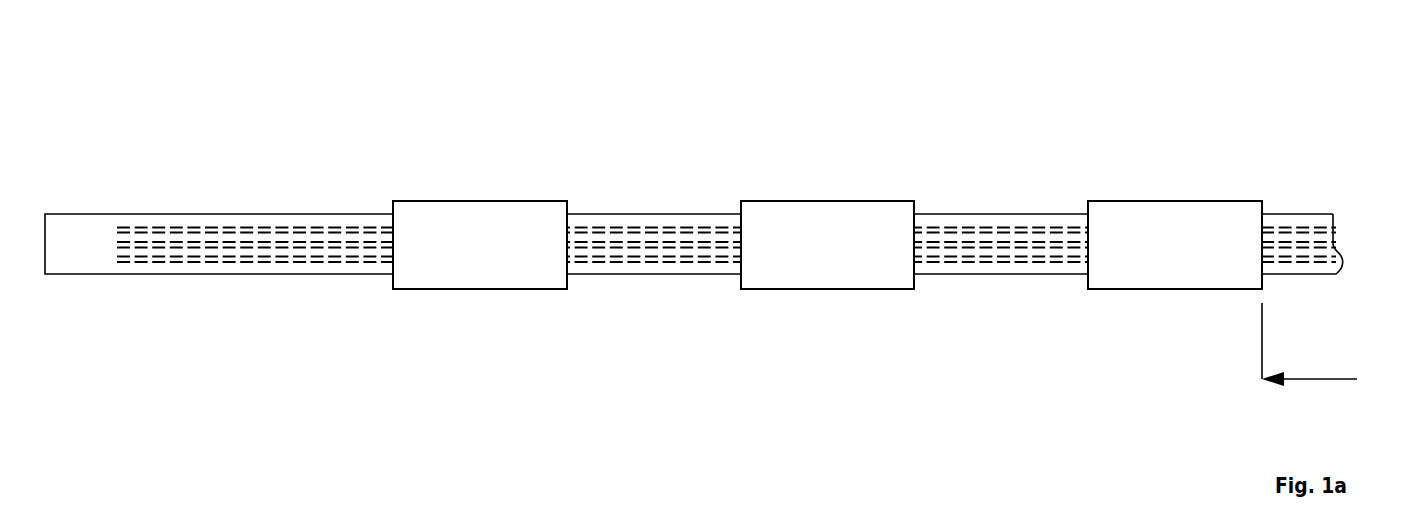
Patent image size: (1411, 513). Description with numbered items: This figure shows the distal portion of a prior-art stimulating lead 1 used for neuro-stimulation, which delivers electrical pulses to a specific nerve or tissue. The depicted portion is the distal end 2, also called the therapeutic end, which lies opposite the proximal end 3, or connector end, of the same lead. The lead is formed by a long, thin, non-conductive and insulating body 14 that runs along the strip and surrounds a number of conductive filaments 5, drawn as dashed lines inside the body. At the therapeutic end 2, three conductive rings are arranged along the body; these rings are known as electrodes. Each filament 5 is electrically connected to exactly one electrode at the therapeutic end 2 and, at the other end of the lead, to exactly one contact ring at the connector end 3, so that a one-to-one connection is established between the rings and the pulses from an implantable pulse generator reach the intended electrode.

The stimulating lead 1 is at (186, 73).
The distal end 2 is at (612, 122).
The proximal end 3 is at (720, 404).
The conductive filaments 5 is at (1270, 230).
The non-conductive body 14 is at (70, 232).